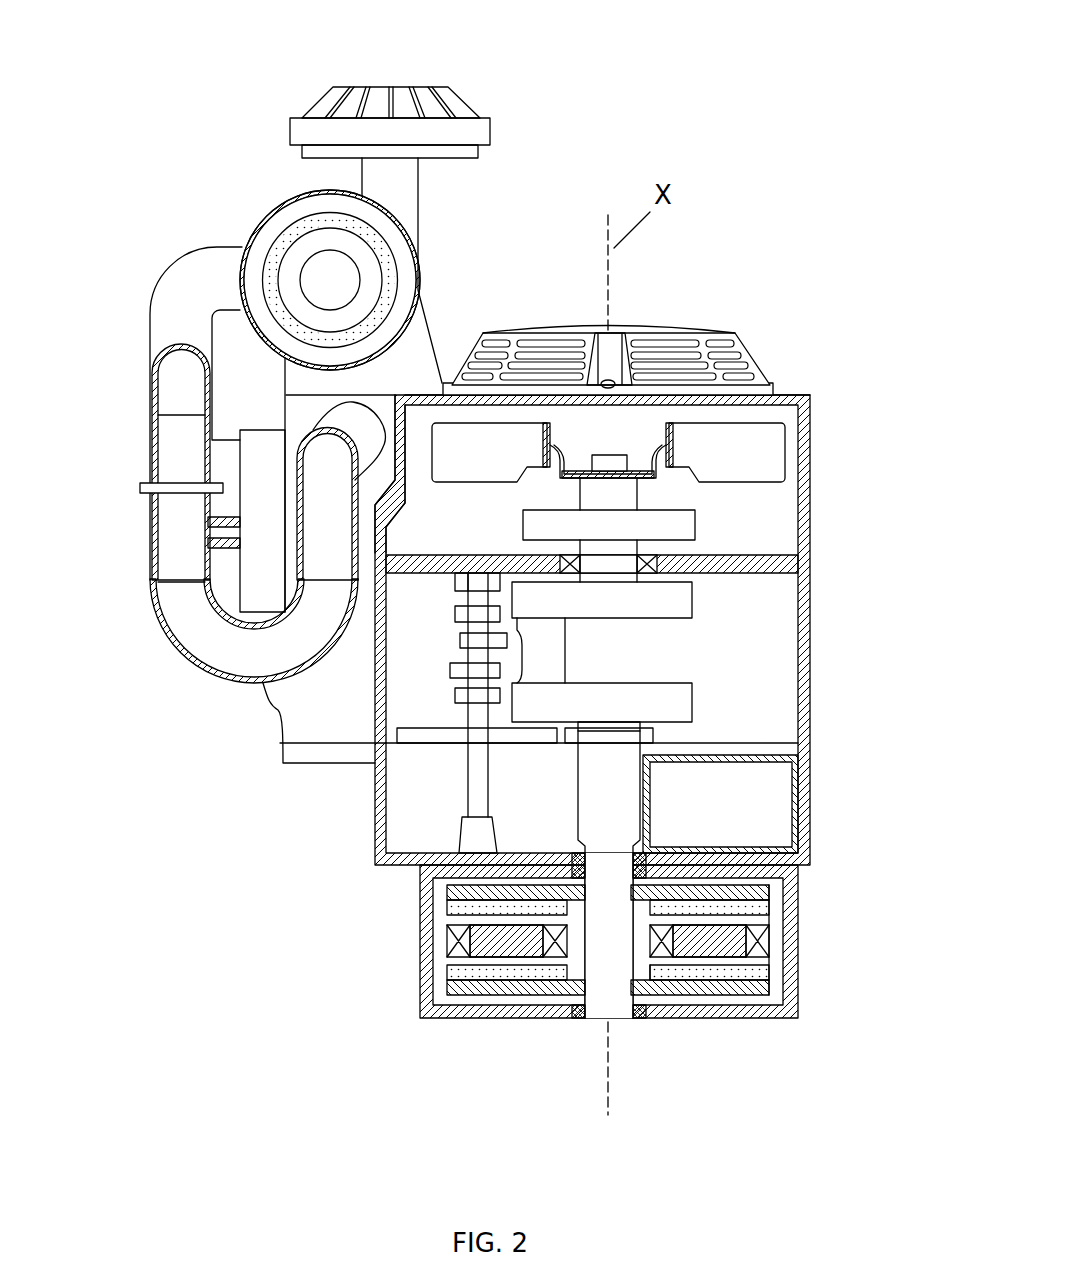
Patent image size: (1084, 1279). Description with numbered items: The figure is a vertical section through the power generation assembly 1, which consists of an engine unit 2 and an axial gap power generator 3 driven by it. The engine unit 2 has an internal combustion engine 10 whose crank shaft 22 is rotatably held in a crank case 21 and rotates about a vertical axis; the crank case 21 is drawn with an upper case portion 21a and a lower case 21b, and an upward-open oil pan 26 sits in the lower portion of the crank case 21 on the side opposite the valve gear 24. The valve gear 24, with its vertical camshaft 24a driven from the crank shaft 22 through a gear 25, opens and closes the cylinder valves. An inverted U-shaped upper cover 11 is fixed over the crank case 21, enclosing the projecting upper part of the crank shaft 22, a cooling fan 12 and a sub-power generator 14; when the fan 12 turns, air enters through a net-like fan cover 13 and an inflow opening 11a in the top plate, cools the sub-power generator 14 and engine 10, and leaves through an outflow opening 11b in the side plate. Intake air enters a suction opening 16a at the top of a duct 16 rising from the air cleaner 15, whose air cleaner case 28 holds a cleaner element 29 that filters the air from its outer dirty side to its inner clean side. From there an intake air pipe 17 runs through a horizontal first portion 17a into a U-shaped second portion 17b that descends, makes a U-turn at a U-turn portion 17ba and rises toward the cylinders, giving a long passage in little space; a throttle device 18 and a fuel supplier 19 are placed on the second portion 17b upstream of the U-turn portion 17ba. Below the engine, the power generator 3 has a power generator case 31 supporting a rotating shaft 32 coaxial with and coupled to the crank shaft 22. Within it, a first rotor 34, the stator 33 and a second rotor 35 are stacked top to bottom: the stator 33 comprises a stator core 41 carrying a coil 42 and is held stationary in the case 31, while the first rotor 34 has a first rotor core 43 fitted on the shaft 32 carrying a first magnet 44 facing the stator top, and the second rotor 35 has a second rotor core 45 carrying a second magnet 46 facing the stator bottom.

The power generation assembly 1 is at (780, 180).
The engine unit 2 is at (815, 398).
The axial gap power generator 3 is at (467, 1022).
The engine 10 is at (814, 590).
The upper cover 11 is at (812, 470).
The inflow opening 11a is at (745, 345).
The outflow opening 11b is at (386, 400).
The cooling fan 12 is at (770, 436).
The fan cover 13 is at (690, 330).
The sub-power generator 14 is at (695, 520).
The air cleaner 15 is at (268, 205).
The duct 16 is at (415, 195).
The suction opening 16a is at (377, 95).
The intake air pipe 17 is at (150, 328).
The first portion 17a is at (185, 250).
The second portion 17b is at (150, 540).
The U-turn portion 17ba is at (225, 683).
The throttle device 18 is at (150, 488).
The fuel supplier 19 is at (255, 605).
The crank case 21 is at (800, 630).
The rotor upper member 21a is at (810, 660).
The lower case 21b is at (812, 760).
The crank shaft 22 is at (617, 783).
The valve gear 24 is at (433, 668).
The camshaft 24a is at (470, 712).
The gear 25 is at (437, 745).
The oil pan 26 is at (772, 805).
The air cleaner case 28 is at (240, 268).
The cleaner element 29 is at (305, 215).
The power generator case 31 is at (800, 1005).
The rotating shaft 32 is at (600, 1000).
The stator 33 is at (246, 915).
The first rotor 34 is at (900, 878).
The second rotor 35 is at (660, 1108).
The stator core 41 is at (515, 1005).
The coil 42 is at (540, 960).
The first rotor core 43 is at (770, 893).
The first magnet 44 is at (762, 905).
The second rotor core 45 is at (680, 990).
The second magnet 46 is at (725, 975).